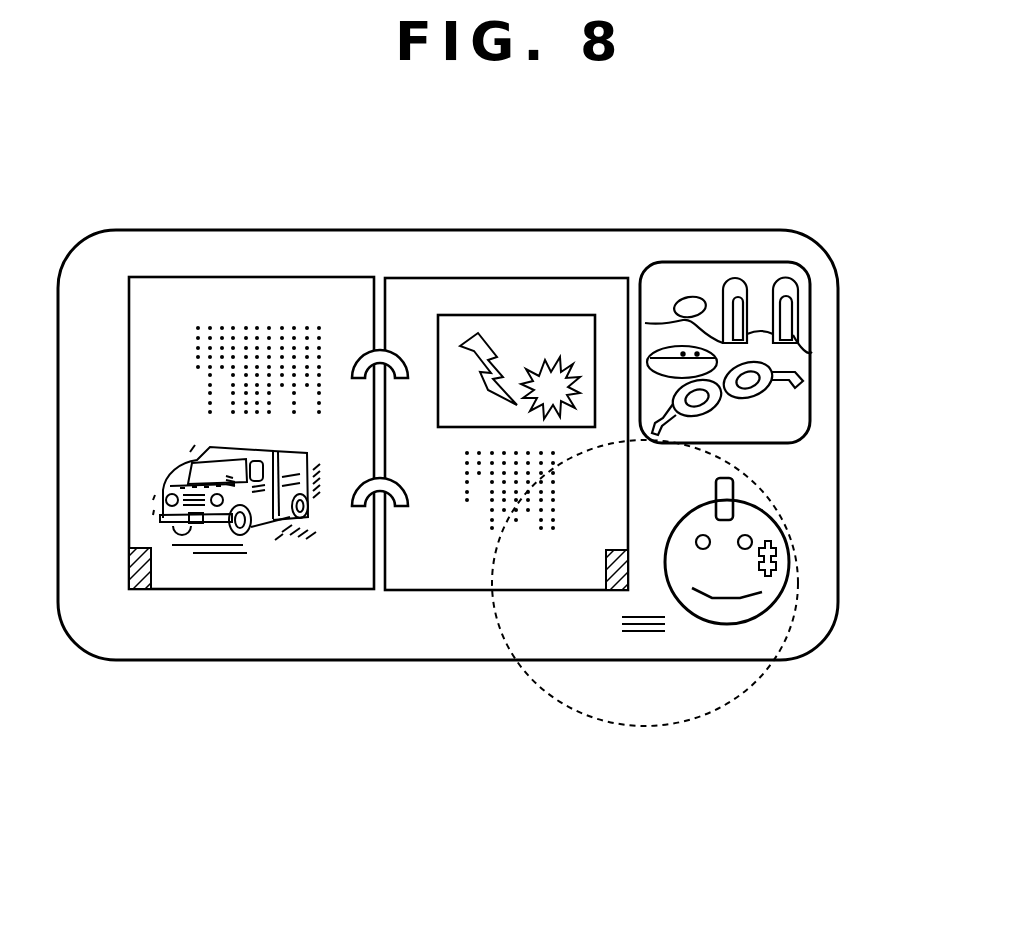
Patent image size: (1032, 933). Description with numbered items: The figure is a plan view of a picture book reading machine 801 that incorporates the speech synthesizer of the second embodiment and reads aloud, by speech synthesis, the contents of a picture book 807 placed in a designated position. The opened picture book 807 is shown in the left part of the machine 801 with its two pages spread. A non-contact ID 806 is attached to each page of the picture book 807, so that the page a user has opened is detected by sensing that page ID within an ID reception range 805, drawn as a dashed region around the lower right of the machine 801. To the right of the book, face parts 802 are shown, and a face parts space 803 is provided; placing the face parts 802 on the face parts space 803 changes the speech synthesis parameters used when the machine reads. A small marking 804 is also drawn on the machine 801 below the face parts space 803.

The display screen 801 is at (593, 230).
The face parts 802 is at (733, 492).
The face parts space 803 is at (743, 612).
The menu indicator 804 is at (645, 637).
The ID reception range 805 is at (522, 668).
The non-contact ID 806 is at (603, 592).
The picture book 807 is at (265, 290).